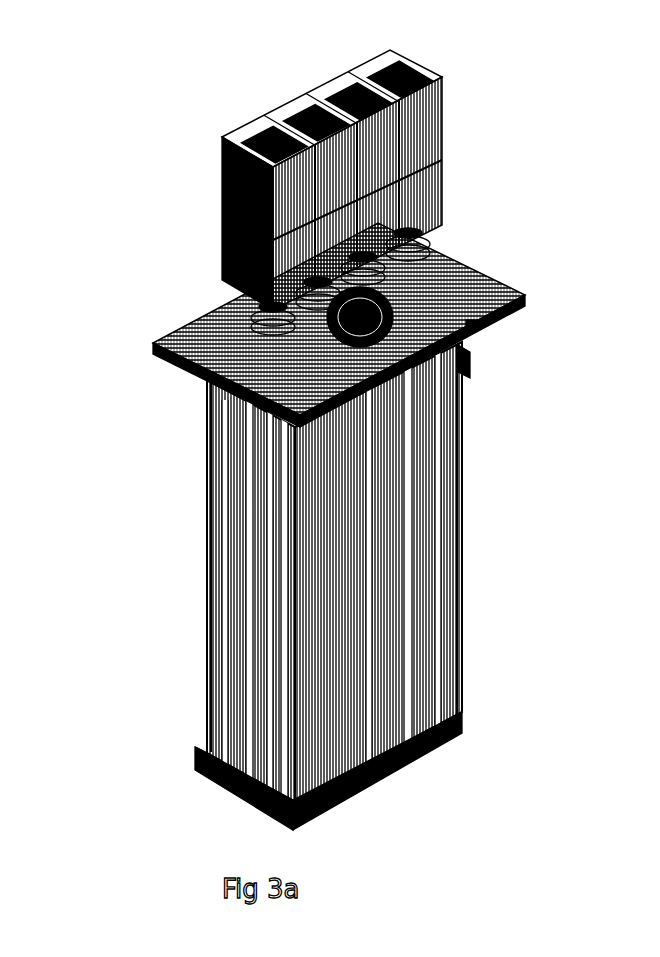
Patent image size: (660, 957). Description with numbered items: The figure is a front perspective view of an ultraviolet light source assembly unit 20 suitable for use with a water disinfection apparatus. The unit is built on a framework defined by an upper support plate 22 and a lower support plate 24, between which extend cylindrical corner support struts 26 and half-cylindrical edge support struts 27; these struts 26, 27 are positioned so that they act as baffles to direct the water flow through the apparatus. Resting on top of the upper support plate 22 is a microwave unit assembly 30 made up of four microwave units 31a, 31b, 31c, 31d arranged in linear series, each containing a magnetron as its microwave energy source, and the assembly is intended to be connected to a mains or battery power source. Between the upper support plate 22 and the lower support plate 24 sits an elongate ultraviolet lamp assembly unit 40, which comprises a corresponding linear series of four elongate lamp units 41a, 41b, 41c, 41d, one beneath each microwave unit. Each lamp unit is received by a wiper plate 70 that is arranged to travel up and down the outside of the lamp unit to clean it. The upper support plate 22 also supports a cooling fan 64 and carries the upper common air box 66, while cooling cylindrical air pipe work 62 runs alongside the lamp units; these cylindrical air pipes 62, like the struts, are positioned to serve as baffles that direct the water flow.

The ultraviolet light source assembly unit 20 is at (500, 471).
The upper support plate 22 is at (500, 275).
The lower support plate 24 is at (437, 758).
The cylindrical corner support struts 26 is at (462, 622).
The half-cylindrical edge support struts 27 is at (205, 720).
The microwave unit assembly 30 is at (363, 434).
The microwave unit 31a is at (238, 130).
The microwave unit 31b is at (285, 105).
The microwave unit 31c is at (332, 78).
The microwave unit 31d is at (372, 57).
The elongate ultraviolet lamp assembly unit 40 is at (196, 600).
The elongate lamp unit 41a is at (280, 657).
The elongate lamp unit 41b is at (300, 595).
The elongate lamp unit 41c is at (270, 560).
The elongate lamp unit 41d is at (250, 520).
The cooling cylindrical air pipe 62 is at (437, 595).
The cooling fan 64 is at (478, 327).
The upper common air box 66 is at (468, 372).
The wiper plate 70 is at (405, 490).